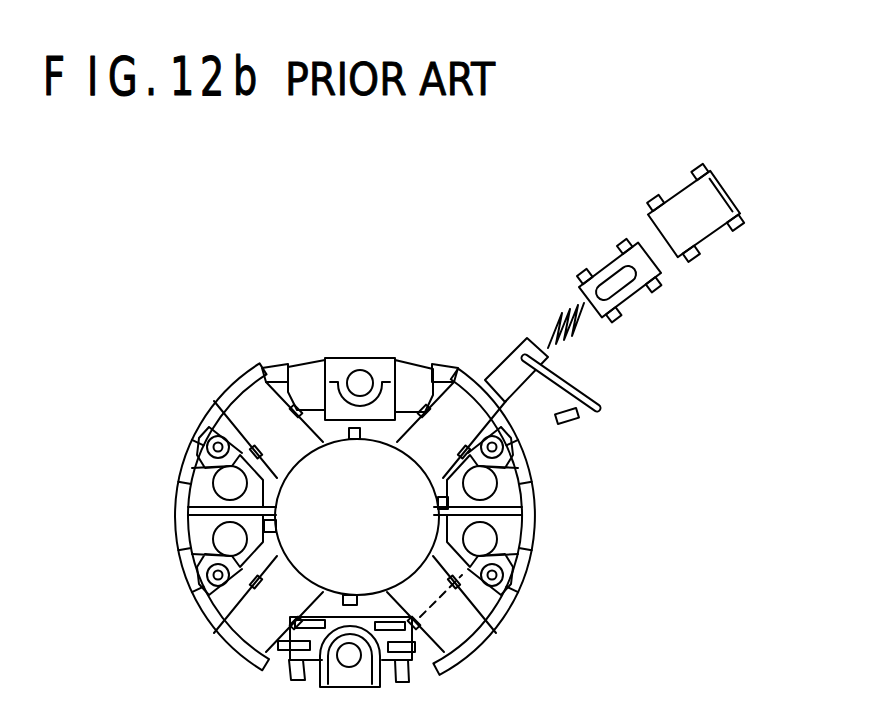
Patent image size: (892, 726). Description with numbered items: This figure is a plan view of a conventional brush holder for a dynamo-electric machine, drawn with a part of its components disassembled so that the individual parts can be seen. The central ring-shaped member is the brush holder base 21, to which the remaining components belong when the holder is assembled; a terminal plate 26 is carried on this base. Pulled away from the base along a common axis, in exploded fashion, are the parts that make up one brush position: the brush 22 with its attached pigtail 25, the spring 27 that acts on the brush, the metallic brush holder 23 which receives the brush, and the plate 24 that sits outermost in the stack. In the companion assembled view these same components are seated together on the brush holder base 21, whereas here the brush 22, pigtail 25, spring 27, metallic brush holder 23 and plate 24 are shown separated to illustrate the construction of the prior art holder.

The brush holder base 21 is at (453, 380).
The brush 22 is at (542, 357).
The metallic brush holder 23 is at (632, 260).
The plate 24 is at (700, 183).
The pigtail 25 is at (580, 418).
The terminal plate 26 is at (308, 370).
The spring 27 is at (553, 312).